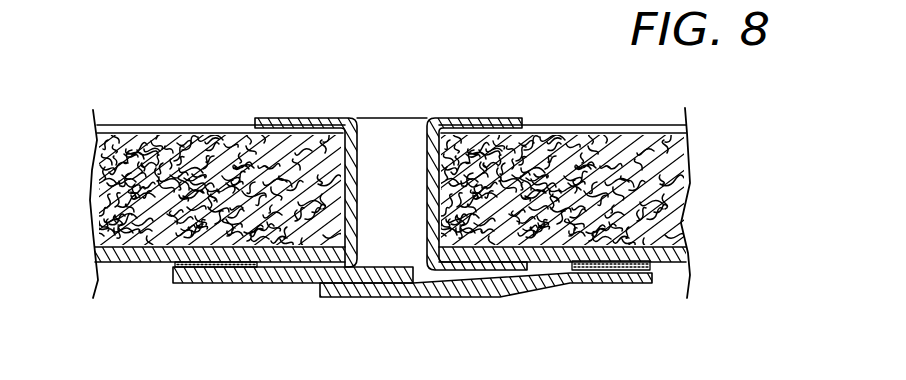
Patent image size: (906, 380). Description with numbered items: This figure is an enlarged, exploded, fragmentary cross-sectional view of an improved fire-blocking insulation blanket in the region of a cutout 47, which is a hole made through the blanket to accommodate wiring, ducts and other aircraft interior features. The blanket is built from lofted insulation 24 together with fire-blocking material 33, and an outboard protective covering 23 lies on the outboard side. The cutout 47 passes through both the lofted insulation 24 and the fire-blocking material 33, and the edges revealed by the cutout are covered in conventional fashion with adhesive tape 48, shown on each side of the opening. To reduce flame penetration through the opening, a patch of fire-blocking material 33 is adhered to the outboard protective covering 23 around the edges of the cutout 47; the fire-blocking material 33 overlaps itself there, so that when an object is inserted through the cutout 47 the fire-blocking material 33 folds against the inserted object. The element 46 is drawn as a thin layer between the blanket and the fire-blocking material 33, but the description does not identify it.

The outboard protective covering 23 is at (120, 263).
The lofted insulation 24 is at (657, 187).
The fire-blocking material 33 is at (688, 253).
The adhesive layer 46 is at (168, 266).
The cutout 47 is at (373, 147).
The adhesive tape 48 is at (463, 121).